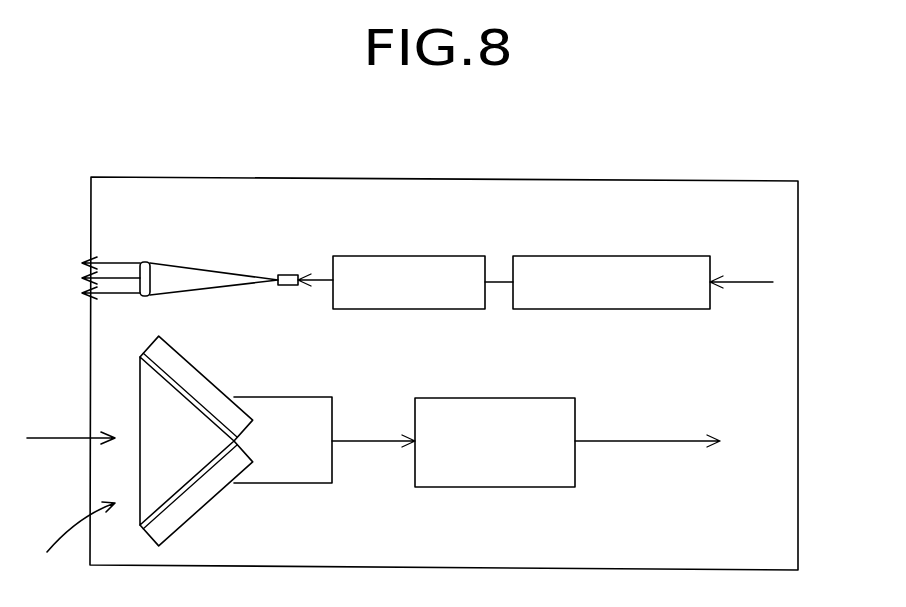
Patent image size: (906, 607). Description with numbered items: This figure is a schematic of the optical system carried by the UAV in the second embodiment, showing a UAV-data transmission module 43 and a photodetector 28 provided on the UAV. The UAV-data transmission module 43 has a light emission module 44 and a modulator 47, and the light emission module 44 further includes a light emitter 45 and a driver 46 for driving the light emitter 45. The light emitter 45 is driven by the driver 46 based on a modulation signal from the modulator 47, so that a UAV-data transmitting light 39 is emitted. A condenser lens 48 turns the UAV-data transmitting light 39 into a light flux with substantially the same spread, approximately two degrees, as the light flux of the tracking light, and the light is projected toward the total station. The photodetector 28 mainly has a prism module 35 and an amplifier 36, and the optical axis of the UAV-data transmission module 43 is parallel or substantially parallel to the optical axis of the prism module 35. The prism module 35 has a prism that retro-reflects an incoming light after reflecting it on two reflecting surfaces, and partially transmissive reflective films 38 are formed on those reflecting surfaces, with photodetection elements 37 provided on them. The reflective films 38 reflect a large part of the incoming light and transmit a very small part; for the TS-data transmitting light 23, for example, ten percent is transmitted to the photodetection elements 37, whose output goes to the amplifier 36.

The TS-data transmitting light 23 is at (65, 438).
The photodetector 28 is at (275, 502).
The prism module 35 is at (66, 547).
The amplifier 36 is at (483, 398).
The photodetection element 37 is at (208, 375).
The partially transmissive reflective film 38 is at (187, 392).
The UAV-data transmitting light 39 is at (141, 291).
The UAV-data transmission module 43 is at (379, 233).
The light emission module 44 is at (224, 265).
The light emitter 45 is at (288, 275).
The driver 46 is at (435, 256).
The modulator 47 is at (680, 256).
The condenser lens 48 is at (146, 262).